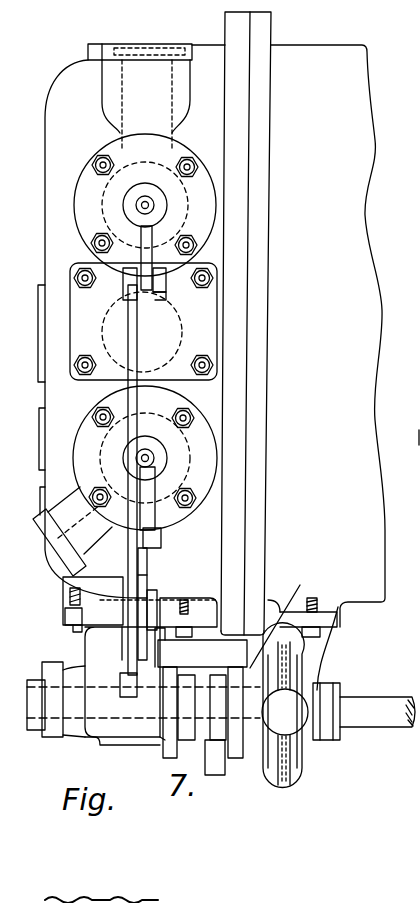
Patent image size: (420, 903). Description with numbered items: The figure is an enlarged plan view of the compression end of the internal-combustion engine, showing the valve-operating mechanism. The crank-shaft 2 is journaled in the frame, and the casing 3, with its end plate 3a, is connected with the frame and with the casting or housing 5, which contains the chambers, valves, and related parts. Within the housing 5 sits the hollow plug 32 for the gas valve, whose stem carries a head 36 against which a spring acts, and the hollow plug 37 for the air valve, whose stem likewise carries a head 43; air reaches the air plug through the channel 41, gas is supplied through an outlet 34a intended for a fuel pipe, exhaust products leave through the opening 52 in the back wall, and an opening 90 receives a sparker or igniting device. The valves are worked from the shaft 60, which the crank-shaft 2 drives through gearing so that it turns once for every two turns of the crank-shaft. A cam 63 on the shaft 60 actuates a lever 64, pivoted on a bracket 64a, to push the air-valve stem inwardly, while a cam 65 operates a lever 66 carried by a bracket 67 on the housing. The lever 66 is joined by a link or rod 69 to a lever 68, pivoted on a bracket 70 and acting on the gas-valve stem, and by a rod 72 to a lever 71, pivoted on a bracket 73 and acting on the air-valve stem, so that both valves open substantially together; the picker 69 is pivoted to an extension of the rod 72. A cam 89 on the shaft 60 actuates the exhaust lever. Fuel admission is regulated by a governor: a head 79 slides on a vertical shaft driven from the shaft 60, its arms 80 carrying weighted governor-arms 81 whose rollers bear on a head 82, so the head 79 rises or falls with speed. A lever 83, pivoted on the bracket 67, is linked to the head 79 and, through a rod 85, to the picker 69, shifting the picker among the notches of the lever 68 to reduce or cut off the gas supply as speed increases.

The crank-shaft 2 is at (415, 435).
The casing 3 is at (215, 367).
The end plate 3a is at (258, 397).
The casting or housing 5 is at (154, 105).
The hollow plug 32 is at (145, 458).
The outlet 34a is at (50, 530).
The head 36 is at (161, 455).
The hollow plug 37 is at (145, 205).
The channel 41 is at (158, 44).
The head 43 is at (146, 194).
The opening 52 is at (42, 372).
The shaft 60 is at (377, 712).
The cam 63 is at (181, 712).
The lever 64 is at (175, 732).
The bracket 64a is at (143, 686).
The cam 65 is at (226, 712).
The lever 66 is at (125, 692).
The bracket 67 is at (201, 648).
The lever 68 is at (153, 482).
The link or rod 69 is at (147, 578).
The bracket 70 is at (162, 536).
The lever 71 is at (147, 236).
The rod 72 is at (138, 340).
The bracket 73 is at (166, 296).
The head 79 is at (246, 742).
The arms 80 is at (290, 686).
The governor-arms 81 is at (272, 670).
The head 82 is at (318, 720).
The lever 83 is at (165, 596).
The rod 85 is at (147, 603).
The cam 89 is at (56, 689).
The opening 90 is at (38, 440).